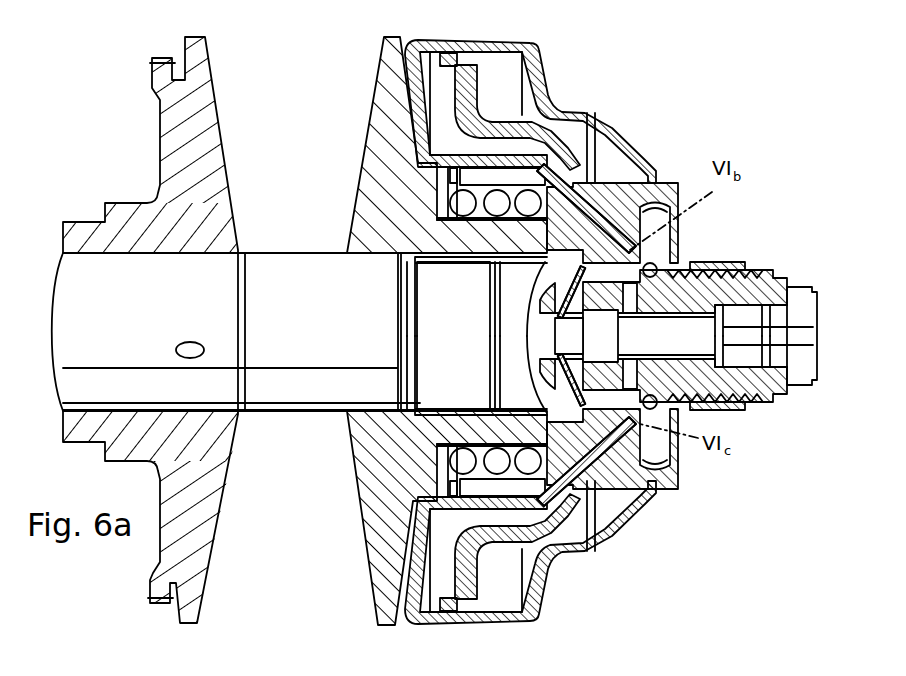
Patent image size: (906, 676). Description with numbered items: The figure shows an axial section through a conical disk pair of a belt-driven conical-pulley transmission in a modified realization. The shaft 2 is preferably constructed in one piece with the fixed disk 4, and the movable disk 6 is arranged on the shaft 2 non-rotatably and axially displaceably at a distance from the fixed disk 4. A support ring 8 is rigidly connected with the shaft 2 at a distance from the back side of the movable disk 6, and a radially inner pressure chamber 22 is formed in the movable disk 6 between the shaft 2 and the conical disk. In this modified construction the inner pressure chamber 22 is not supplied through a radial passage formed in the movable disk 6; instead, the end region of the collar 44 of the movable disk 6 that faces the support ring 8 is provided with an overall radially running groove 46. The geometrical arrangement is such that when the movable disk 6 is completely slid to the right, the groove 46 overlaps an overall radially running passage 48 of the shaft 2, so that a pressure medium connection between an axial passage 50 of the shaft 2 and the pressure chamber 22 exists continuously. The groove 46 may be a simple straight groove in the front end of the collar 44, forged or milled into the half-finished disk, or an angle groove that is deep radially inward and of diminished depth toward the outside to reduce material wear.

The shaft 2 is at (149, 316).
The fixed disk 4 is at (200, 118).
The movable disk 6 is at (380, 123).
The support ring 8 is at (619, 183).
The inner pressure chamber 22 is at (440, 183).
The collar 44 is at (575, 150).
The groove 46 is at (656, 264).
The passage 48 is at (573, 392).
The axial passage 50 is at (793, 310).